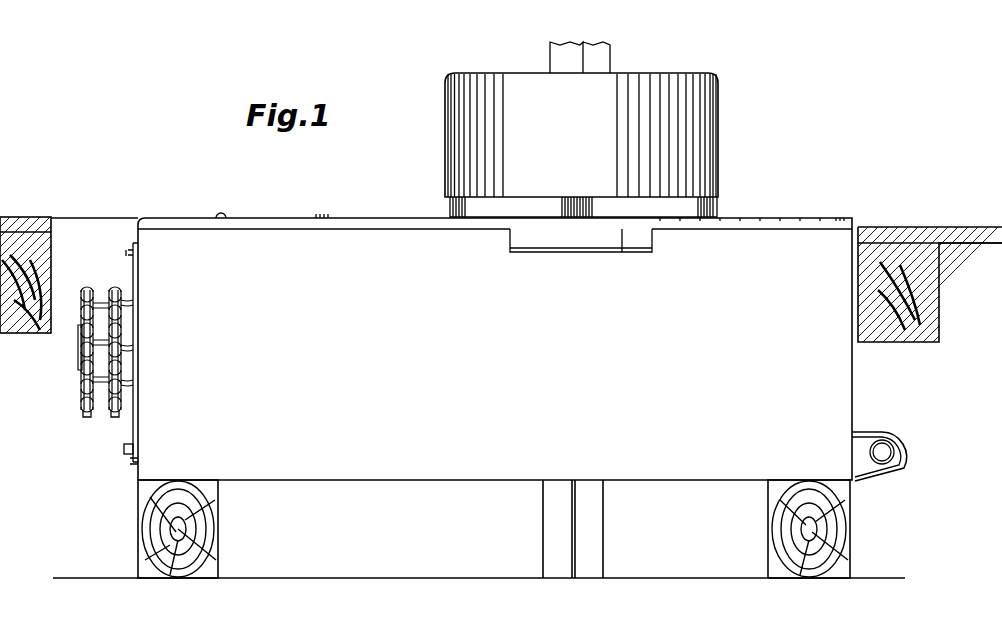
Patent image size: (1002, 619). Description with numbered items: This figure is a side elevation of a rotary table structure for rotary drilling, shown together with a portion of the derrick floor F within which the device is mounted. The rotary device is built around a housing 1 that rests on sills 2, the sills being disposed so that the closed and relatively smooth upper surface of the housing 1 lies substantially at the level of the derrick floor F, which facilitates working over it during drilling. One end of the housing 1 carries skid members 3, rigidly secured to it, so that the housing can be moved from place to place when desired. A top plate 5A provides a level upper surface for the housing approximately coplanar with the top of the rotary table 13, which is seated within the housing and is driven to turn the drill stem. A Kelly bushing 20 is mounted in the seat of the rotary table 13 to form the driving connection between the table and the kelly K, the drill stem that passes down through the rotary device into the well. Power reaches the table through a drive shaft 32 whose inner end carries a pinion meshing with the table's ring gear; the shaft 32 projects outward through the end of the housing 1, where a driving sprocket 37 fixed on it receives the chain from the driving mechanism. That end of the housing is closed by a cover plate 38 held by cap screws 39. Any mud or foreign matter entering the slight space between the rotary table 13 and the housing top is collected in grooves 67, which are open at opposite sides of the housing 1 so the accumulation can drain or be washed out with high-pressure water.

The housing 1 is at (403, 475).
The sills 2 is at (140, 524).
The skid members 3 is at (872, 476).
The top plate 5A is at (156, 222).
The rotary table 13 is at (812, 222).
The Kelly bushing 20 is at (716, 214).
The drive shaft 32 is at (78, 357).
The driving sprocket 37 is at (112, 418).
The cover plate 38 is at (130, 461).
The cap screws 39 is at (124, 449).
The grooves 67 is at (654, 243).
The derrick floor F is at (912, 236).
The kelly K is at (598, 522).